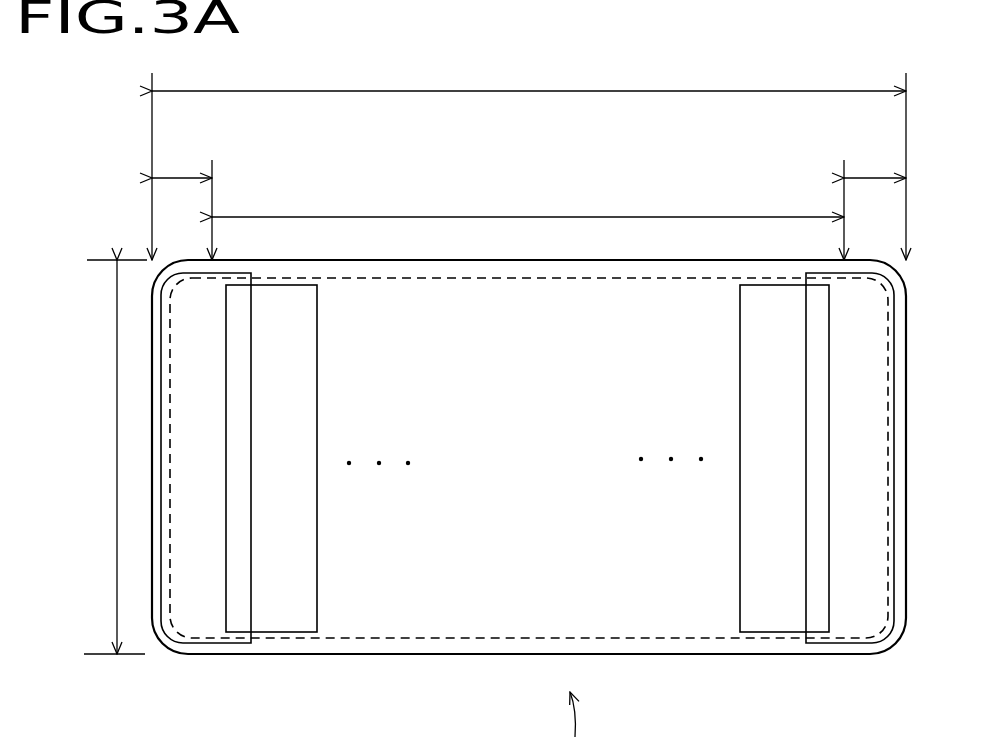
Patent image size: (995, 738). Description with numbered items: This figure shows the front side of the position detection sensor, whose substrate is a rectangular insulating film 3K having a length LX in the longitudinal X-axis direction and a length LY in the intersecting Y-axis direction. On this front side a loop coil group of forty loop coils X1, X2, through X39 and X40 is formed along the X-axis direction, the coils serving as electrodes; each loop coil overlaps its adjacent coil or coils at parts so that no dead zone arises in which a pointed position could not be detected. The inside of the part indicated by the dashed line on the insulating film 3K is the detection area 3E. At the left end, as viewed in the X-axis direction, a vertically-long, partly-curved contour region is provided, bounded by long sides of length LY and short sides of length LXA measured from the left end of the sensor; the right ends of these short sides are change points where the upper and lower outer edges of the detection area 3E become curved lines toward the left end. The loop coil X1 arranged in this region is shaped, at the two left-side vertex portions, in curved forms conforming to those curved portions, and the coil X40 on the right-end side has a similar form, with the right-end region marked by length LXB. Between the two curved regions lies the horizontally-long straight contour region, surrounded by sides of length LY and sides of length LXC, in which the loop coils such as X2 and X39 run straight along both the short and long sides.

The insulating film 3K is at (437, 654).
The detection area 3E is at (612, 638).
The loop coil X1 is at (193, 643).
The loop coil X2 is at (284, 632).
The loop coil X39 is at (758, 632).
The loop coil X40 is at (845, 643).
The length in longitudinal direction LX is at (529, 159).
The length of short sides of partly-curved contour region LXA is at (182, 175).
The right end region length LXB is at (875, 175).
The length of straight contour region LXC is at (528, 210).
The length in intersecting direction LY is at (111, 457).